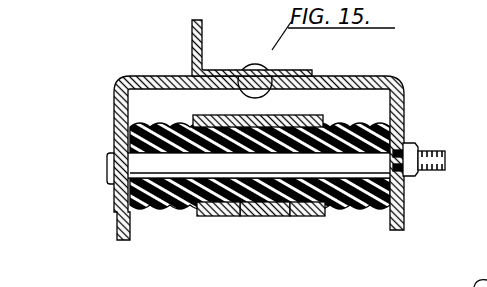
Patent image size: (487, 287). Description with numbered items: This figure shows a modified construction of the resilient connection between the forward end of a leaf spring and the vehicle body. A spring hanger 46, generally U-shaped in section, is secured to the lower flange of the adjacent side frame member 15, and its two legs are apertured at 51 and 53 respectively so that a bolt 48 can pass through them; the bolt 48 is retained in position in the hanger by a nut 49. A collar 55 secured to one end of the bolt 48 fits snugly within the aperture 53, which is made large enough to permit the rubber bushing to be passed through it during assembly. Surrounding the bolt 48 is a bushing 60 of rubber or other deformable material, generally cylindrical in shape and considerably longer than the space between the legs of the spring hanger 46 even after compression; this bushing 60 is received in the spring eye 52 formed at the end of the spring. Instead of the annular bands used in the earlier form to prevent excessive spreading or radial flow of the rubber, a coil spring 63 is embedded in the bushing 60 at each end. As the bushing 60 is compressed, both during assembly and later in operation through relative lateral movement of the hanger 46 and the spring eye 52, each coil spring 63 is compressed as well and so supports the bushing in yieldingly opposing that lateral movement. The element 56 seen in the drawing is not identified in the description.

The side frame member 15 is at (193, 39).
The spring hanger 46 is at (388, 80).
The bolt 48 is at (143, 163).
The nut 49 is at (416, 176).
The aperture 51 is at (403, 133).
The spring eye 52 is at (308, 214).
The aperture 53 is at (116, 114).
The collar 55 is at (116, 198).
The sleeve 56 is at (258, 215).
The bushing 60 is at (217, 217).
The coil spring 63 is at (160, 204).